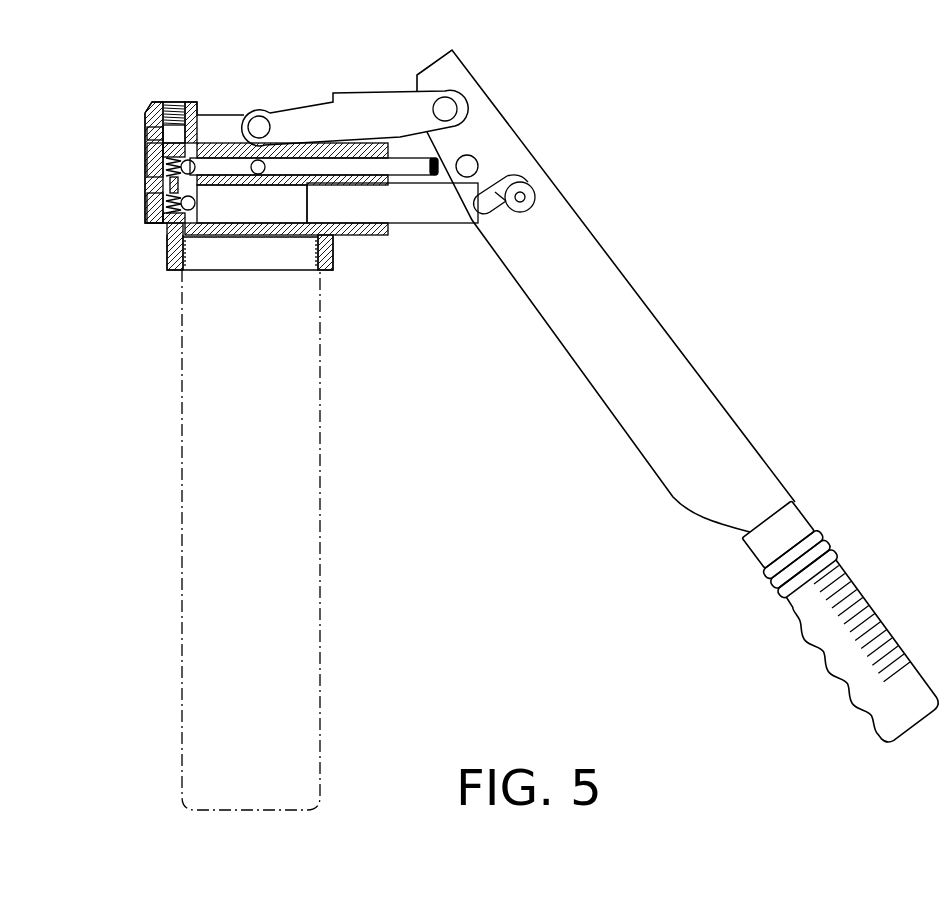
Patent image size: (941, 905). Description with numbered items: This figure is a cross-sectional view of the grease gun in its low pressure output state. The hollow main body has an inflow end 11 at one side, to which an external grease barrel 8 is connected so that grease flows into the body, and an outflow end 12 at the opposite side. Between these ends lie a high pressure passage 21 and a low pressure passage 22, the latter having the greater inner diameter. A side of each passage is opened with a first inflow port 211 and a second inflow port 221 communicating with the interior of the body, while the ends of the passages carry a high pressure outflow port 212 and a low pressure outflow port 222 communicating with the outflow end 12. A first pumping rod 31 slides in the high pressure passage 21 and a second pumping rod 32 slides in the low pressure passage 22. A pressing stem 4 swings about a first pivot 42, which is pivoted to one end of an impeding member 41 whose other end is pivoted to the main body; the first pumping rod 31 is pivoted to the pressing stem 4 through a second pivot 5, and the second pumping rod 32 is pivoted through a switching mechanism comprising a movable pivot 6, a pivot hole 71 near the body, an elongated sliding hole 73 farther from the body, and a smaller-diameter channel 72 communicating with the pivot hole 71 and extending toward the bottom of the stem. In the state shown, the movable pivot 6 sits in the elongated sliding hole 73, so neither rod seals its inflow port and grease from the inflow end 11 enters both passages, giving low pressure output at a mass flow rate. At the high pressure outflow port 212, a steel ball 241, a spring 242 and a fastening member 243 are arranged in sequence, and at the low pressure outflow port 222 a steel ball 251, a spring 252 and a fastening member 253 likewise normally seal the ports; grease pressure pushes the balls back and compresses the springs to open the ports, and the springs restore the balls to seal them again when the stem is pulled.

The pressing stem 4 is at (715, 402).
The first pivot 42 is at (461, 111).
The second pivot 5 is at (480, 163).
The movable pivot 6 is at (532, 208).
The pivot hole 71 is at (490, 217).
The channel 72 is at (500, 205).
The elongated sliding hole 73 is at (517, 170).
The impeding member 41 is at (353, 92).
The first inflow port 211 is at (268, 112).
The first pumping rod 31 is at (410, 157).
The second pumping rod 32 is at (423, 223).
The high pressure passage 21 is at (222, 150).
The outflow end 12 is at (181, 102).
The high pressure outflow port 212 is at (230, 200).
The low pressure passage 22 is at (285, 240).
The second inflow port 221 is at (288, 237).
The low pressure outflow port 222 is at (208, 236).
The inflow end 11 is at (193, 273).
The grease barrel 8 is at (181, 407).
The steel ball 241 is at (145, 137).
The spring 242 is at (147, 152).
The fastening member 243 is at (148, 173).
The fastening member 253 is at (148, 210).
The spring 252 is at (168, 225).
The steel ball 251 is at (170, 238).